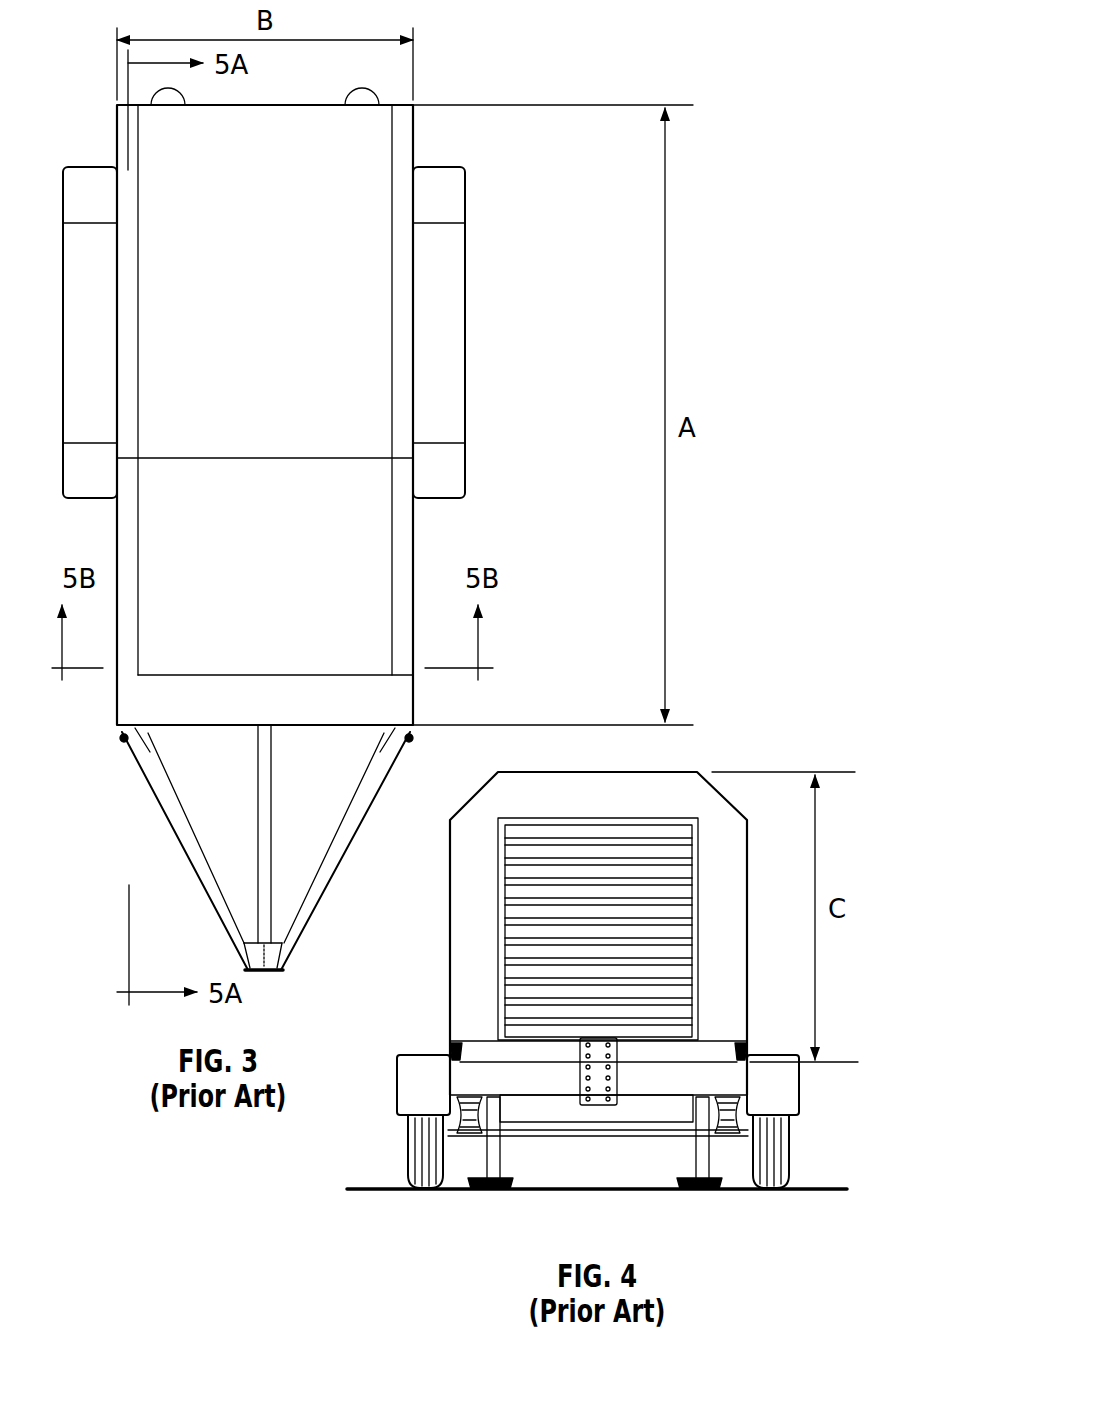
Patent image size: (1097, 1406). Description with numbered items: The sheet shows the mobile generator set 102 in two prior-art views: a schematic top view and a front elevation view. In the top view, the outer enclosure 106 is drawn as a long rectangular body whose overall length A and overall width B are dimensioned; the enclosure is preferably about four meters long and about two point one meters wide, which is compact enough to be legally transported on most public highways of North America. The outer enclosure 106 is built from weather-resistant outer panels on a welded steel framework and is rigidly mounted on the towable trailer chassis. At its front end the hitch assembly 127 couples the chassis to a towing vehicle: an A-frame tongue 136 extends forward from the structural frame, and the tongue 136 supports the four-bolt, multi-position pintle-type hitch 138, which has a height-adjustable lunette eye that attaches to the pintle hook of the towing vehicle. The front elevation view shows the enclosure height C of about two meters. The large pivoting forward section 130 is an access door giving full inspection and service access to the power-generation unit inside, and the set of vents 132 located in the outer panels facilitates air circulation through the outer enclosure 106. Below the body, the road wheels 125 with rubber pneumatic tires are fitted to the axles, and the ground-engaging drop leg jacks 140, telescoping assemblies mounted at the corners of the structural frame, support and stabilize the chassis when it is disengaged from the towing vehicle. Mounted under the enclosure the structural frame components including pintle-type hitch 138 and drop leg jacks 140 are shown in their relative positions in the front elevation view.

In FIG. 3, the mobile generator set 102 is at (336, 406).
In FIG. 4, the mobile generator set 102 is at (618, 879).
In FIG. 3, the outer enclosure 106 is at (402, 327).
In FIG. 4, the outer enclosure 106 is at (723, 745).
In FIG. 4, the road wheels 125 is at (790, 1140).
In FIG. 3, the hitch assembly 127 is at (295, 977).
In FIG. 3, the pivoting forward section 130 is at (368, 523).
In FIG. 4, the pivoting forward section 130 is at (450, 947).
In FIG. 4, the vents 132 is at (498, 963).
In FIG. 3, the A-frame tongue 136 is at (330, 872).
In FIG. 4, the A-frame tongue 136 is at (508, 1218).
In FIG. 4, the pintle-type hitch 138 is at (580, 1105).
In FIG. 4, the drop leg jacks 140 is at (483, 1157).